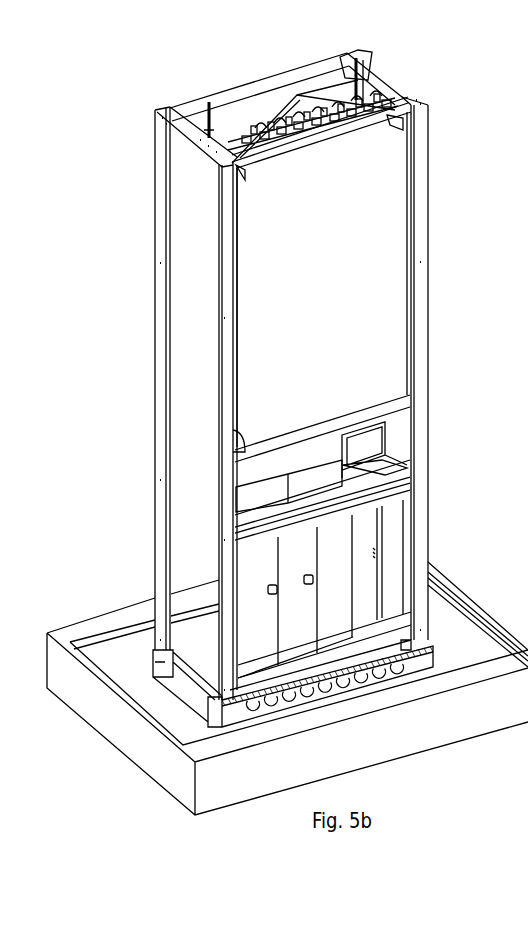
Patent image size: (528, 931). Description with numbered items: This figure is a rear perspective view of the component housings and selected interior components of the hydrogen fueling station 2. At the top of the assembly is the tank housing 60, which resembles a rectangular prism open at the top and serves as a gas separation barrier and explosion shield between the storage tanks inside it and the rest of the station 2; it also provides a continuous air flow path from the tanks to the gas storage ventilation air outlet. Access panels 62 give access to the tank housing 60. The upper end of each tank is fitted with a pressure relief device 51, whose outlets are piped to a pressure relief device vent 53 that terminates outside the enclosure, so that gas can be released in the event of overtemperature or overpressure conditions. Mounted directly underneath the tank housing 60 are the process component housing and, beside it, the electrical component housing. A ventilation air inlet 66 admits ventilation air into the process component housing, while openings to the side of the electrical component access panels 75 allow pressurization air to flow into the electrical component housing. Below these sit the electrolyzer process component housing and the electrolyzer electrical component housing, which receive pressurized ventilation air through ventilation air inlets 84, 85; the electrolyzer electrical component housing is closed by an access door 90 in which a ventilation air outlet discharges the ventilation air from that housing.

The station 2 is at (107, 100).
The pressure relief device 51 is at (353, 108).
The pressure relief device vent 53 is at (206, 130).
The tank housing 60 is at (287, 274).
The access panels 62 is at (397, 220).
The ventilation air inlet 66 is at (385, 437).
The electrical component access panels 75 is at (220, 520).
The ventilation air inlet 84 is at (432, 566).
The ventilation air inlet 85 is at (368, 525).
The access door 90 is at (257, 628).